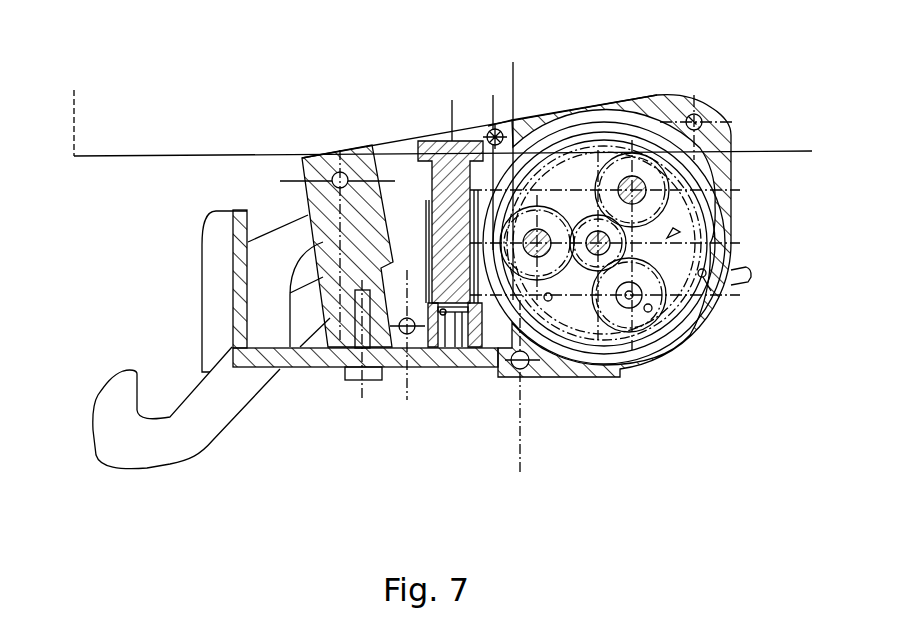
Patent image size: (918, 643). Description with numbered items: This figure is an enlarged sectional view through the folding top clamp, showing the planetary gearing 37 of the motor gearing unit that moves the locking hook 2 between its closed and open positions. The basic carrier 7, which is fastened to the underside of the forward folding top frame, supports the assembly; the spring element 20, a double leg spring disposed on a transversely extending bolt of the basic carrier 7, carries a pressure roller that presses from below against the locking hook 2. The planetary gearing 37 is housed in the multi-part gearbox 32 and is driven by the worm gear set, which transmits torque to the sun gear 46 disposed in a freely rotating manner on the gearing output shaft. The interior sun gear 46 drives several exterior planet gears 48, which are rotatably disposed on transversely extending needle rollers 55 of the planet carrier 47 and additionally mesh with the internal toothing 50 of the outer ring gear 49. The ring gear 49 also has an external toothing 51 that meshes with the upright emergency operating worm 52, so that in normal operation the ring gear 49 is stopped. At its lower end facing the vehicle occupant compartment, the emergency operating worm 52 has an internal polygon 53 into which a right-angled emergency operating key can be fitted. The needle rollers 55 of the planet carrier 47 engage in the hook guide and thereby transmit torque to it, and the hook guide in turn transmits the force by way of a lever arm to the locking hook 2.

The locking hook 2 is at (143, 469).
The basic carrier 7 is at (240, 268).
The spring element 20 is at (352, 378).
The gearbox 32 is at (323, 143).
The planetary gearing 37 is at (672, 232).
The sun gear 46 is at (572, 207).
The planet carrier 47 is at (548, 301).
The planet gears 48 is at (650, 312).
The ring gear 49 is at (717, 302).
The internal toothing 50 is at (590, 147).
The external toothing 51 is at (718, 220).
The emergency operating worm 52 is at (443, 185).
The internal polygon 53 is at (430, 348).
The needle rollers 55 is at (627, 300).